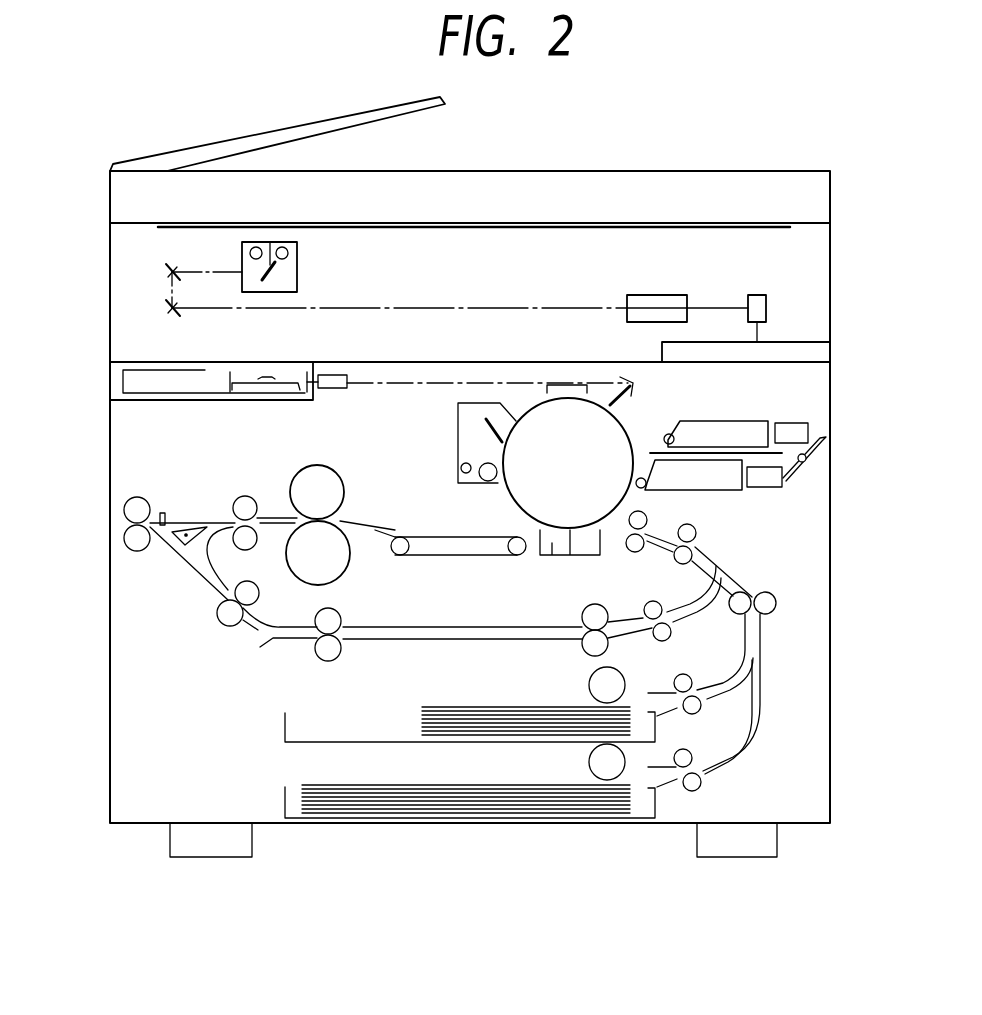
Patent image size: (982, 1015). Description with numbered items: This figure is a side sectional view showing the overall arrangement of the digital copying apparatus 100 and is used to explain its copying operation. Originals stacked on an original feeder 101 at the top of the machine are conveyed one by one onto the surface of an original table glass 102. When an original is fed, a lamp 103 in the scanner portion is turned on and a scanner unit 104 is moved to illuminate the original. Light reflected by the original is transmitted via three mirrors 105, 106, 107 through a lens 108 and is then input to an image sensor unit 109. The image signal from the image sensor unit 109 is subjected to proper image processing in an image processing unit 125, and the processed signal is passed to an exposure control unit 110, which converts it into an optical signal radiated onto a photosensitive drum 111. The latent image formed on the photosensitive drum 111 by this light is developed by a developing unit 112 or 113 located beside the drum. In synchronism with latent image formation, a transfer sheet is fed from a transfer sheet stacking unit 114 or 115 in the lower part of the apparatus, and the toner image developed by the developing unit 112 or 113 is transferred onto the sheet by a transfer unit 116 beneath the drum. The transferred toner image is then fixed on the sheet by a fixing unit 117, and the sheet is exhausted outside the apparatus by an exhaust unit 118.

The digital copying apparatus 100 is at (534, 137).
The original feeder 101 is at (227, 140).
The original table glass 102 is at (683, 225).
The lamp 103 is at (283, 247).
The scanner unit 104 is at (297, 270).
The mirror 105 is at (240, 266).
The mirror 106 is at (168, 271).
The mirror 107 is at (168, 308).
The lens 108 is at (642, 294).
The image sensor unit 109 is at (767, 307).
The image processing unit 125 is at (803, 341).
The exposure control unit 110 is at (190, 362).
The photosensitive drum 111 is at (545, 423).
The developing unit 112 is at (755, 433).
The developing unit 113 is at (725, 480).
The transfer sheet stacking unit 114 is at (642, 730).
The transfer sheet stacking unit 115 is at (643, 807).
The transfer unit 116 is at (553, 547).
The fixing unit 117 is at (303, 550).
The exhaust unit 118 is at (140, 538).